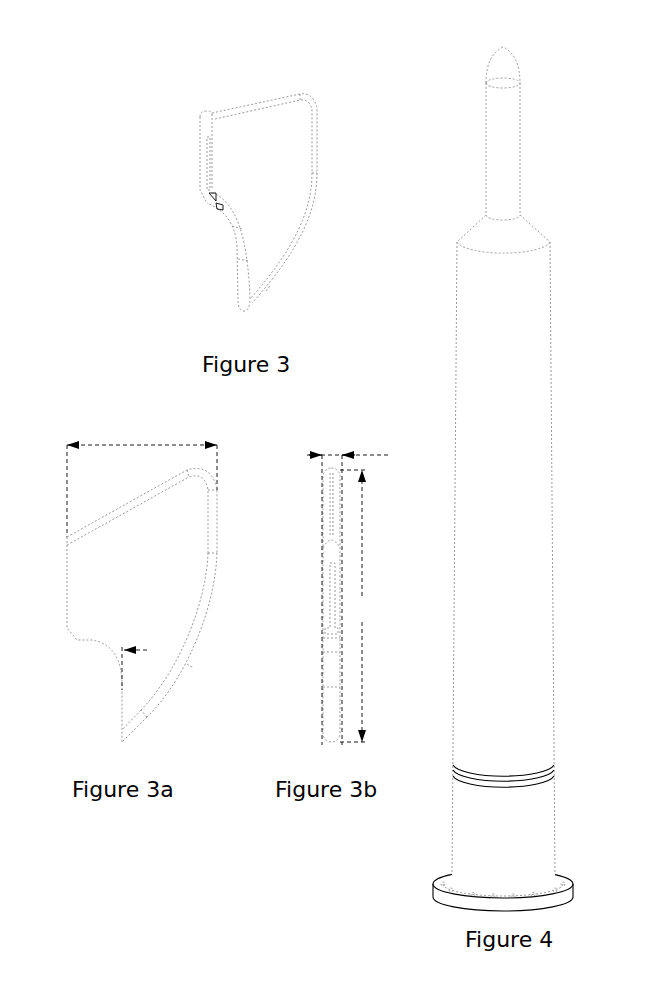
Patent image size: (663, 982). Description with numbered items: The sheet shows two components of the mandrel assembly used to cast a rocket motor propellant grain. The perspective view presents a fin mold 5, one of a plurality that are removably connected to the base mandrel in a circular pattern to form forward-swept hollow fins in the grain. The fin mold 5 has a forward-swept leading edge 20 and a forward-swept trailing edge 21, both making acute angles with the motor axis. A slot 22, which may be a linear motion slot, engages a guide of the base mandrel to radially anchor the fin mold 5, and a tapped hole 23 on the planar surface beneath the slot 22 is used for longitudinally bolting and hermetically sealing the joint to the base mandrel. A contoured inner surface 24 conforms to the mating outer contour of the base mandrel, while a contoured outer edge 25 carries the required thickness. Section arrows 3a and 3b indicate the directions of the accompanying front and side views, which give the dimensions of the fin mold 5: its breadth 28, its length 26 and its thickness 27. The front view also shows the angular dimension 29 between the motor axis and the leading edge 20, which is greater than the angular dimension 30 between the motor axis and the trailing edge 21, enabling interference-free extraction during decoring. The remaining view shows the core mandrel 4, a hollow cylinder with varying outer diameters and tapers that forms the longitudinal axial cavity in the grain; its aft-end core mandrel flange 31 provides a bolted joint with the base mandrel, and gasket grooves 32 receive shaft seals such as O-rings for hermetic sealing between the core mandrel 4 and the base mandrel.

In FIG. 3, the fin mold 5 is at (333, 106).
In FIG. 3, the leading edge 20 is at (248, 100).
In FIG. 3A, the leading edge 20 is at (102, 525).
In FIG. 3, the trailing edge 21 is at (262, 298).
In FIG. 3A, the trailing edge 21 is at (134, 723).
In FIG. 3, the slot 22 is at (206, 198).
In FIG. 3, the tapped hole 23 is at (221, 211).
In FIG. 3, the contoured inner surface 24 is at (202, 127).
In FIG. 3, the contoured outer edge 25 is at (209, 109).
In FIG. 3, the view direction 3a is at (321, 188).
In FIG. 3, the view direction 3b is at (183, 172).
In FIG. 3A, the breadth 28 is at (142, 479).
In FIG. 3A, the angular dimension between motor axis and leading edge 29 is at (132, 499).
In FIG. 3A, the angular dimension between motor axis and trailing edge 30 is at (189, 676).
In FIG. 3B, the thickness 27 is at (348, 588).
In FIG. 3B, the length 26 is at (358, 606).
In FIG. 4, the core mandrel 4 is at (518, 492).
In FIG. 4, the gasket groove 32 is at (554, 764).
In FIG. 4, the core mandrel flange 31 is at (566, 879).